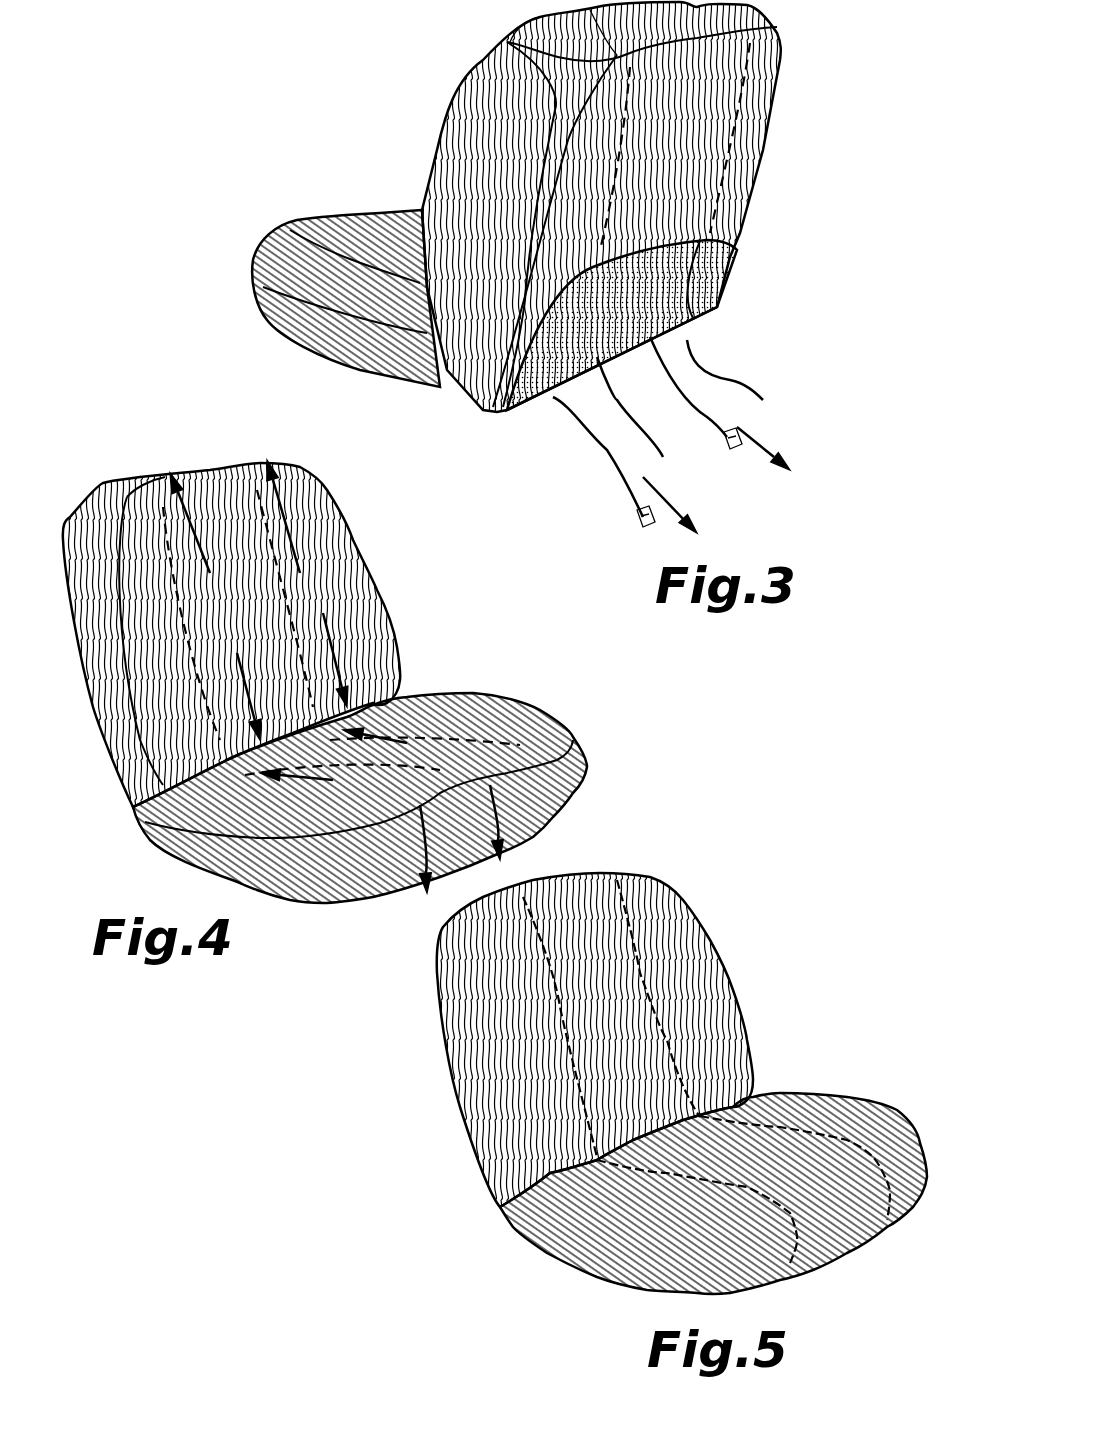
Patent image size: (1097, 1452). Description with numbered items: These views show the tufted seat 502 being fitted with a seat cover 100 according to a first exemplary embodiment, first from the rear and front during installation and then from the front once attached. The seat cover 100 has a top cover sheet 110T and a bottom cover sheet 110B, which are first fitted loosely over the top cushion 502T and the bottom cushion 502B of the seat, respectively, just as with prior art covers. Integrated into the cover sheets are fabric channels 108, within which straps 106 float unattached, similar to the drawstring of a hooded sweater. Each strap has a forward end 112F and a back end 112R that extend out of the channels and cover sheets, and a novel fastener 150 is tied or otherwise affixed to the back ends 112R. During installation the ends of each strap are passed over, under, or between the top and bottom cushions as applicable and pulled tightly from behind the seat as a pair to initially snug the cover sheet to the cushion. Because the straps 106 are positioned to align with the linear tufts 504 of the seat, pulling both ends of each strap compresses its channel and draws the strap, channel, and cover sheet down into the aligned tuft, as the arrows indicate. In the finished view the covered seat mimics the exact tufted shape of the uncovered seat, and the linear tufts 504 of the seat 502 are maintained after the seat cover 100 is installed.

In FIG. 3, the seat cover 100 is at (582, 267).
In FIG. 4, the seat cover 100 is at (331, 681).
In FIG. 5, the seat cover 100 is at (626, 1066).
In FIG. 3, the straps 106 is at (722, 305).
In FIG. 5, the straps 106 is at (724, 1071).
In FIG. 3, the fabric channels 108 is at (730, 170).
In FIG. 4, the fabric channels 108 is at (340, 693).
In FIG. 5, the fabric channels 108 is at (761, 1116).
In FIG. 3, the top cover sheet 110T is at (782, 51).
In FIG. 3, the bottom cover sheet 110B is at (346, 280).
In FIG. 3, the top cushion 502T is at (722, 312).
In FIG. 3, the bottom cushion 502B is at (333, 353).
In FIG. 5, the tufted seat 502 is at (440, 1070).
In FIG. 5, the linear tufts 504 is at (787, 1127).
In FIG. 3, the forward end 112F is at (742, 381).
In FIG. 3, the back end 112R is at (774, 433).
In FIG. 3, the fastener 150 is at (743, 463).